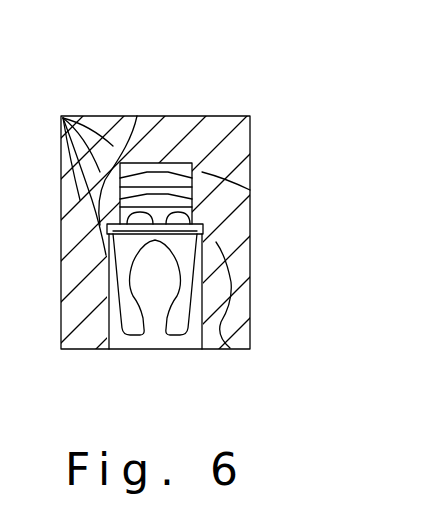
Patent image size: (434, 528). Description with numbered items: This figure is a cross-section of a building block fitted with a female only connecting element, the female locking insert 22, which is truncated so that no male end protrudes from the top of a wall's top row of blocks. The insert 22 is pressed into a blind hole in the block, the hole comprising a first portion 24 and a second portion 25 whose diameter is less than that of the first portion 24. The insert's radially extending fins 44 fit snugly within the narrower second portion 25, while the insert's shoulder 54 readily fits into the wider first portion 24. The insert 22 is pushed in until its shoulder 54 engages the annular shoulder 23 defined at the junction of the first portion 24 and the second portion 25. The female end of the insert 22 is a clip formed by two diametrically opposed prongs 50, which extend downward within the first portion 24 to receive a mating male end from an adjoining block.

The female only locking insert 22 is at (152, 158).
The annular shoulder 23 is at (203, 212).
The first portion of blind hole 24 is at (193, 350).
The second portion of blind hole 25 is at (192, 178).
The radially extending fins 44 is at (137, 116).
The prongs 50 is at (128, 336).
The shoulder 54 is at (203, 229).